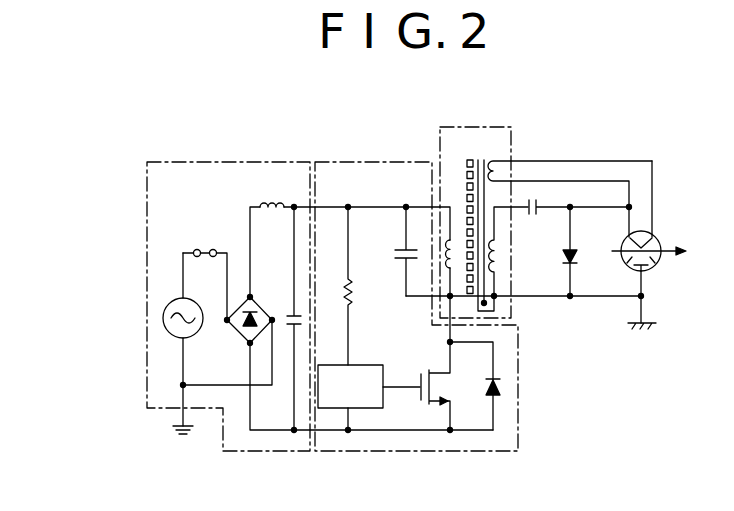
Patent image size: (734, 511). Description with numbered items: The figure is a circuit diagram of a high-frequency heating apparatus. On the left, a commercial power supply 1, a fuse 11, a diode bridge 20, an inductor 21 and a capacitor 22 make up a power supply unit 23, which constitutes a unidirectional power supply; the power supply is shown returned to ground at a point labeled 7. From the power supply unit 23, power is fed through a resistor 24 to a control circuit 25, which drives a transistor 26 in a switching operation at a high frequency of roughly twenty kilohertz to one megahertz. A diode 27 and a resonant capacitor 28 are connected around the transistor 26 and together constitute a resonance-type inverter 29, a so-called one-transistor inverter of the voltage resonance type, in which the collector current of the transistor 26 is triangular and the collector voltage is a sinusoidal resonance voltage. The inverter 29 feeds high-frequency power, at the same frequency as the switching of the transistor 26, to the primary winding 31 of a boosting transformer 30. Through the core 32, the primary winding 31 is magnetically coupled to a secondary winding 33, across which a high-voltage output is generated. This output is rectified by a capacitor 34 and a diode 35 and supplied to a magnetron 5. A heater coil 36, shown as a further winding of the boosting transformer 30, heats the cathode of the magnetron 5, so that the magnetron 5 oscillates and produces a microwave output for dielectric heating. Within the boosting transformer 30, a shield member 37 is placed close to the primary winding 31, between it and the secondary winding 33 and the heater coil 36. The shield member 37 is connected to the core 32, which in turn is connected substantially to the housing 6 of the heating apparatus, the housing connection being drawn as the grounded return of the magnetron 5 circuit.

The commercial power supply 1 is at (170, 305).
The magnetron 5 is at (659, 265).
The housing 6 is at (657, 318).
The ground 7 is at (172, 424).
The fuse 11 is at (206, 250).
The diode bridge 20 is at (238, 328).
The inductor 21 is at (266, 205).
The capacitor 22 is at (289, 316).
The power supply unit 23 is at (218, 162).
The resistor 24 is at (353, 290).
The control circuit 25 is at (371, 365).
The transistor 26 is at (443, 388).
The diode 27 is at (503, 386).
The resonant capacitor 28 is at (396, 253).
The resonance-type inverter 29 is at (340, 160).
The boosting transformer 30 is at (447, 126).
The primary winding 31 is at (444, 256).
The core 32 is at (481, 158).
The secondary winding 33 is at (501, 256).
The capacitor 34 is at (533, 214).
The diode 35 is at (577, 254).
The heater coil 36 is at (497, 170).
The shield member 37 is at (469, 158).